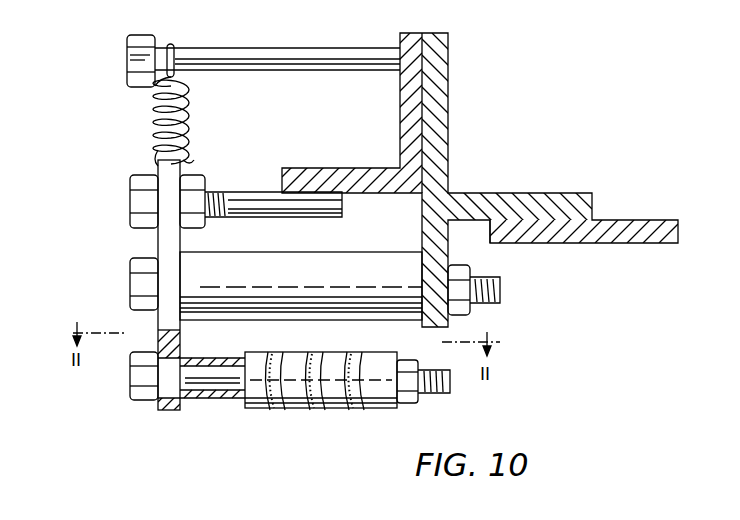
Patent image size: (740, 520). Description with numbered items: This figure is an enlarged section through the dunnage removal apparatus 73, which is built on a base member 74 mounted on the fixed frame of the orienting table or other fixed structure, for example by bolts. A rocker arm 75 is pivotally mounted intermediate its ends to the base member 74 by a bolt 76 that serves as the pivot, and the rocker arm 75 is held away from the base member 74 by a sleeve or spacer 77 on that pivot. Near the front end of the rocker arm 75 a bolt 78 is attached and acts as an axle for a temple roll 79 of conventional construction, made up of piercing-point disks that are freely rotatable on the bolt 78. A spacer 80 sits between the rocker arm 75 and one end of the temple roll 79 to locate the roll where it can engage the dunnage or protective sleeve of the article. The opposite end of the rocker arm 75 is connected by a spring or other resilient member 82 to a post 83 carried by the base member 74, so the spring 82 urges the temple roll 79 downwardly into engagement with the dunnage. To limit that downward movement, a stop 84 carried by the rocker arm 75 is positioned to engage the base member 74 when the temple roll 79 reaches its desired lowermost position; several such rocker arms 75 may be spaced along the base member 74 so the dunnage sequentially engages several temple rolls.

The dunnage removal apparatus 73 is at (118, 236).
The base member 74 is at (438, 165).
The rocker arm 75 is at (168, 412).
The bolt 76 is at (500, 285).
The sleeve or spacer 77 is at (372, 265).
The bolt 78 is at (135, 378).
The temple roll 79 is at (373, 415).
The spacer 80 is at (237, 398).
The spring or resilient member 82 is at (192, 118).
The post 83 is at (310, 58).
The stop 84 is at (262, 207).